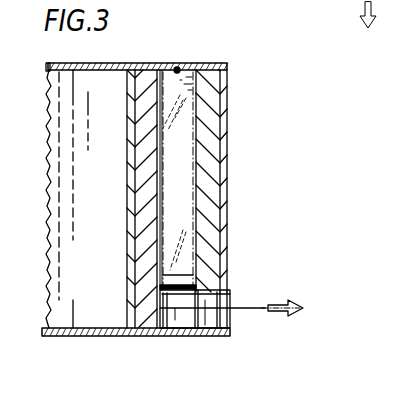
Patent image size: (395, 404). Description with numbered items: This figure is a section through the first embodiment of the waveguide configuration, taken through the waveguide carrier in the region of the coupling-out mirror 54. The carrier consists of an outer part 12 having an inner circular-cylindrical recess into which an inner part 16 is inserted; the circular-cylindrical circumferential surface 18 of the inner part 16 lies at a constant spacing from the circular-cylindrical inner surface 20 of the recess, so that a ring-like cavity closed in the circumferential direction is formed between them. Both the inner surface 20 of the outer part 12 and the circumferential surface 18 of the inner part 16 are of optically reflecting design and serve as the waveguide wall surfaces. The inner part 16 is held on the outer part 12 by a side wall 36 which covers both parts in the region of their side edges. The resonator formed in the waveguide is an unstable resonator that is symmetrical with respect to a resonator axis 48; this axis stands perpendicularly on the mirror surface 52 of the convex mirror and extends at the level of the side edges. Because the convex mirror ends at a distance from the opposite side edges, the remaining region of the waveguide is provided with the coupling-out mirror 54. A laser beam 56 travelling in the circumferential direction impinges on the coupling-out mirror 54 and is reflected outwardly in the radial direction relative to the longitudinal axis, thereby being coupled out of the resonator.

The outer part 12 is at (212, 131).
The inner part 16 is at (145, 133).
The circumferential surface 18 is at (164, 196).
The inner surface 20 is at (188, 212).
The side wall 36 is at (163, 67).
The resonator axis 48 is at (177, 67).
The mirror surface 52 is at (182, 163).
The coupling-out mirror 54 is at (183, 333).
The laser beam 56 is at (253, 310).